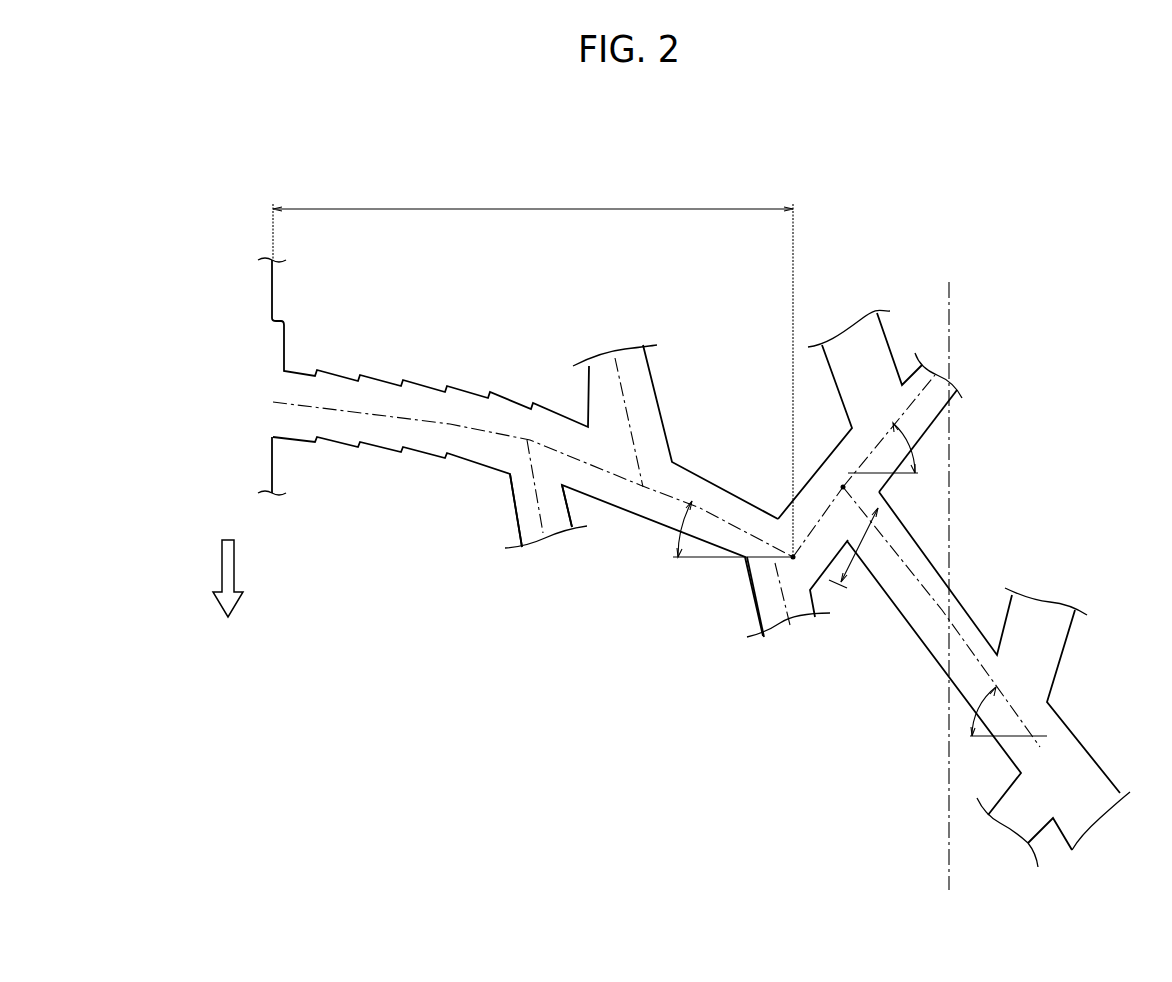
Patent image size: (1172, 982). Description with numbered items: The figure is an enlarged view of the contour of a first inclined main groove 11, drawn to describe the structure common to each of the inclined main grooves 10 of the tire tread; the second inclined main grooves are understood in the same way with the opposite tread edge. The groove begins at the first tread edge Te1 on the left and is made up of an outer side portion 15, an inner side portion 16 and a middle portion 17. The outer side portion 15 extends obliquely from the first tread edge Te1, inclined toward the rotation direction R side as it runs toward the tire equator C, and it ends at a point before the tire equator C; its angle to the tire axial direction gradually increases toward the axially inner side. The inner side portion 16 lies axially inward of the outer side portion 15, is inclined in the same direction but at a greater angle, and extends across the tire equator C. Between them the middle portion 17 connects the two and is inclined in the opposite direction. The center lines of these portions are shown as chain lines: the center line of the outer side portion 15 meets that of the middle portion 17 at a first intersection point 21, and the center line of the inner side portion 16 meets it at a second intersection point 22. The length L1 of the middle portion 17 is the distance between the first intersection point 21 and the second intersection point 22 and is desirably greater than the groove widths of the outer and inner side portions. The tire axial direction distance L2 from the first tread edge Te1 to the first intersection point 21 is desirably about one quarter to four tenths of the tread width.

The inclined main groove 10 is at (563, 398).
The first inclined main groove 11 is at (533, 519).
The outer side portion 15 is at (470, 433).
The inner side portion 16 is at (931, 587).
The middle portion 17 is at (822, 490).
The first intersection point 21 is at (788, 560).
The second intersection point 22 is at (850, 490).
The first tread edge Te1 is at (270, 291).
The length of the middle portion L1 is at (853, 560).
The tire axial direction distance L2 is at (533, 365).
The tire equator C is at (950, 570).
The rotation direction R is at (228, 597).